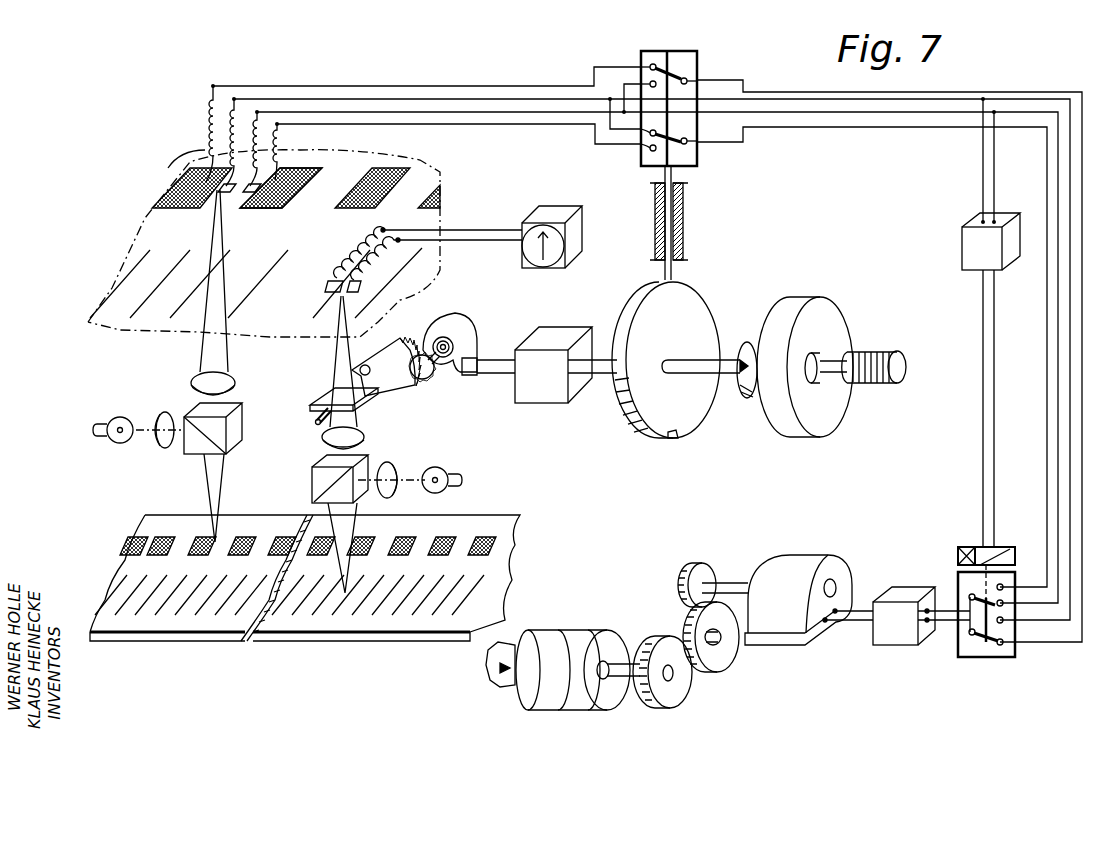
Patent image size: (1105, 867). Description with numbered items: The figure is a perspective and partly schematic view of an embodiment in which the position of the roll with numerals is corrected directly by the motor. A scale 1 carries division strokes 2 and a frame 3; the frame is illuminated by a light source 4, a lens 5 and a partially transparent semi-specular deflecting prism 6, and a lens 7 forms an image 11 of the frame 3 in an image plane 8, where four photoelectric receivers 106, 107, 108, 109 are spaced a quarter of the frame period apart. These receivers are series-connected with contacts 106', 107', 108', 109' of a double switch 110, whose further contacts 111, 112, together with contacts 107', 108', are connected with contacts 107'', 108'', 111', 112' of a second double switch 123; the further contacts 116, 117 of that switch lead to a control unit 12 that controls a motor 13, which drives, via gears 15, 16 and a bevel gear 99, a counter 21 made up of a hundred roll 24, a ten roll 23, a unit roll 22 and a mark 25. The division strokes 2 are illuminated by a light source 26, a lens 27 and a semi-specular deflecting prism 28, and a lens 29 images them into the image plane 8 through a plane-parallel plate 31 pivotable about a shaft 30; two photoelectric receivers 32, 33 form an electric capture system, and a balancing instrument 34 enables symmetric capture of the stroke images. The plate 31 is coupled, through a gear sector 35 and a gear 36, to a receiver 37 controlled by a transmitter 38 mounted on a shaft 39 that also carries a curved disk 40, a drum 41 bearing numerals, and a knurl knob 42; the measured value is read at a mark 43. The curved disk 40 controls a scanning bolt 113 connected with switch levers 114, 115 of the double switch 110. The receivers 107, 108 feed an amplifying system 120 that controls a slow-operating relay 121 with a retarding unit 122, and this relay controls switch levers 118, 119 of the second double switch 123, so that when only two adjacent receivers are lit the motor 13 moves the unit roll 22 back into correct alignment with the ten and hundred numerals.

The scale 1 is at (130, 568).
The division stroke 2 is at (260, 620).
The frame 3 is at (302, 545).
The light source 4 is at (120, 417).
The lens 5 is at (162, 447).
The semi-specular deflecting prism 6 is at (202, 445).
The lens 7 is at (235, 382).
The image plane 8 is at (210, 336).
The image of frame 11 is at (186, 190).
The control unit 12 is at (888, 595).
The motor 13 is at (785, 575).
The gear 15 is at (700, 573).
The gear 16 is at (720, 652).
The counter 21 is at (522, 698).
The unit roll 22 is at (595, 635).
The ten roll 23 is at (566, 635).
The hundred roll 24 is at (538, 635).
The mark 25 is at (486, 668).
The light source 26 is at (452, 472).
The lens 27 is at (400, 472).
The semi-specular deflecting prism 28 is at (362, 462).
The lens 29 is at (325, 440).
The shaft 30 is at (315, 421).
The plane-parallel plate 31 is at (320, 398).
The photoelectric receiver 32 is at (330, 283).
The photoelectric receiver 33 is at (362, 287).
The balancing instrument 34 is at (540, 210).
The gear sector 35 is at (397, 380).
The gear 36 is at (426, 380).
The receiver 37 is at (462, 320).
The transmitter 38 is at (550, 342).
The shaft 39 is at (728, 382).
The curved disk 40 is at (640, 405).
The drum 41 is at (790, 325).
The knurl knob 42 is at (870, 355).
The mark 43 is at (746, 344).
The bevel gear 99 is at (682, 675).
The photoelectric receiver 106 is at (176, 147).
The photoelectric receiver 107 is at (199, 167).
The photoelectric receiver 108 is at (277, 173).
The photoelectric receiver 109 is at (340, 166).
The double switch 110 is at (690, 152).
The contact 111 is at (716, 75).
The contact 112 is at (700, 129).
The scanning bolt 113 is at (674, 272).
The switch lever 114 is at (688, 72).
The switch lever 115 is at (684, 150).
The contact 116 is at (969, 595).
The contact 117 is at (968, 636).
The switch lever 118 is at (984, 600).
The switch lever 119 is at (982, 645).
The amplifying system 120 is at (960, 250).
The slow-operating relay 121 is at (997, 553).
The retarding unit 122 is at (966, 548).
The second double switch 123 is at (1005, 655).
The contact 106' is at (626, 56).
The contact 107' is at (619, 149).
The contact 108' is at (626, 75).
The contact 109' is at (626, 168).
The contact 112' is at (1029, 569).
The contact 107'' is at (999, 666).
The contact 108'' is at (1043, 635).
The contact 111' is at (1039, 655).